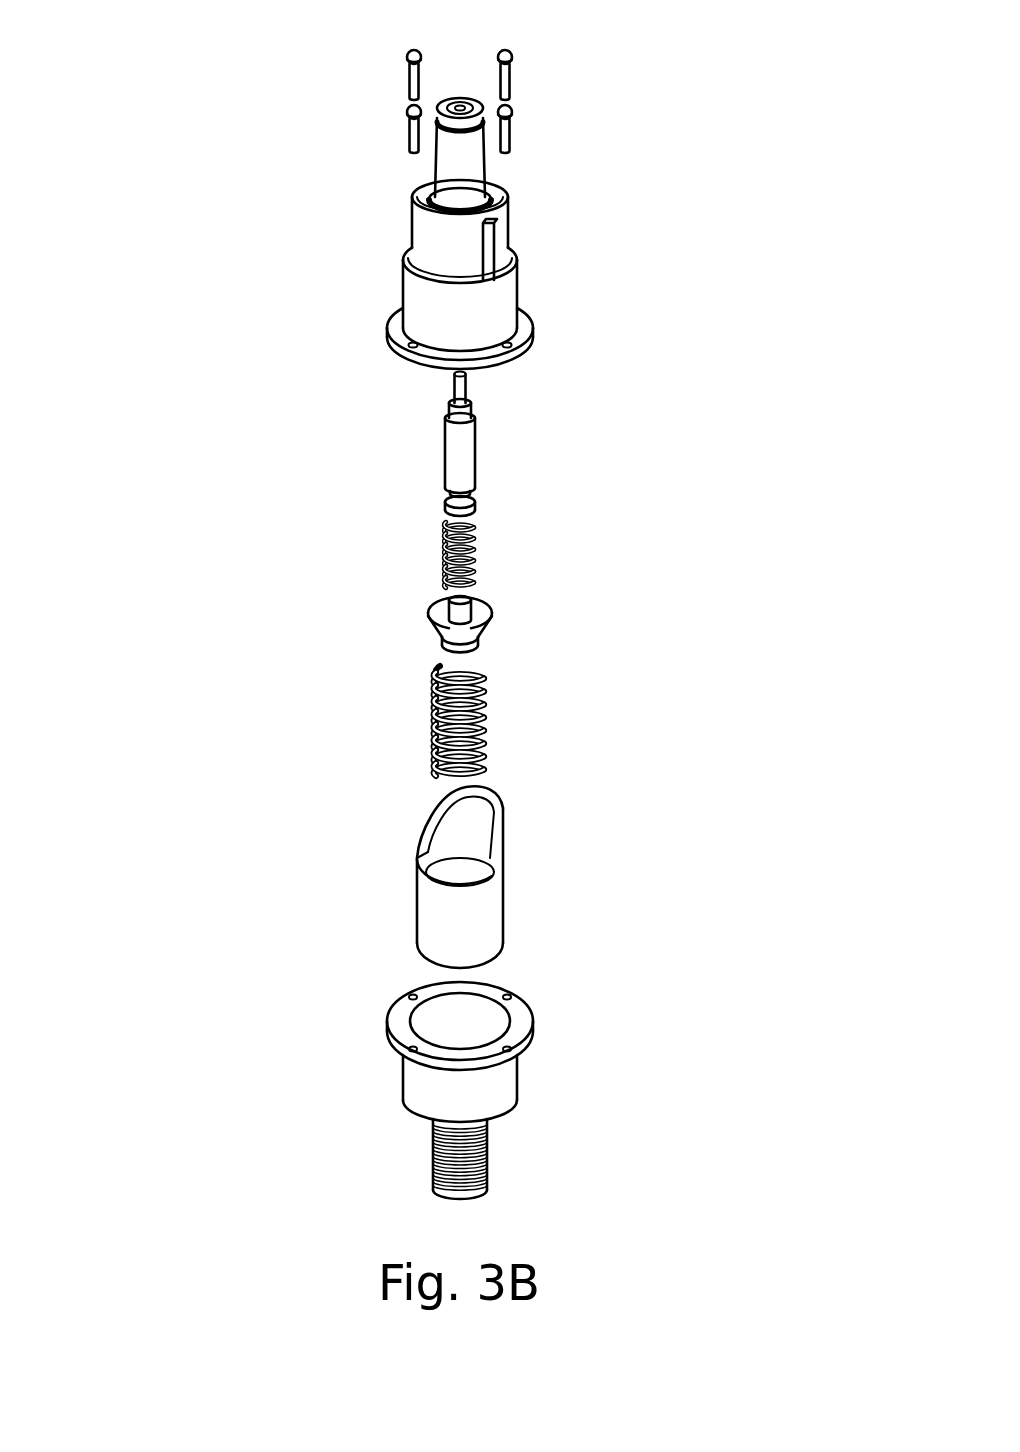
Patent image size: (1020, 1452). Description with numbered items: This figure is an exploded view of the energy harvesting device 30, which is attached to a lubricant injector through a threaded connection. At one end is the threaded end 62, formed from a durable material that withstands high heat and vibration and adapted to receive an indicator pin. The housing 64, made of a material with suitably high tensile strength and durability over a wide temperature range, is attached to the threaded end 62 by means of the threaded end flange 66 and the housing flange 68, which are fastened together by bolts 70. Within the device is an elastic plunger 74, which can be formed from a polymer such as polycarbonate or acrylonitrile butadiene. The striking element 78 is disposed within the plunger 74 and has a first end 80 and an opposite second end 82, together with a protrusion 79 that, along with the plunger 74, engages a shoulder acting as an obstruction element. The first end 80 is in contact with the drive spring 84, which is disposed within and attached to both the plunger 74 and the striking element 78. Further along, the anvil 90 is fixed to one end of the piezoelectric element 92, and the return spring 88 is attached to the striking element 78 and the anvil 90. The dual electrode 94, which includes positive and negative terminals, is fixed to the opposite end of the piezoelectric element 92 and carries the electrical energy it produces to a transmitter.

The energy harvesting device 30 is at (184, 244).
The energy harvesting device threaded end 62 is at (487, 1162).
The housing 64 is at (500, 246).
The threaded end flange 66 is at (518, 1020).
The housing flange 68 is at (521, 321).
The bolts 70 is at (405, 57).
The plunger 74 is at (497, 870).
The striking element 78 is at (458, 618).
The striking element protrusion 79 is at (432, 613).
The striking element first end 80 is at (445, 645).
The striking element second end 82 is at (455, 603).
The drive spring 84 is at (487, 712).
The return spring 88 is at (475, 545).
The anvil 90 is at (475, 508).
The piezoelectric element 92 is at (466, 447).
The dual electrode 94 is at (466, 405).